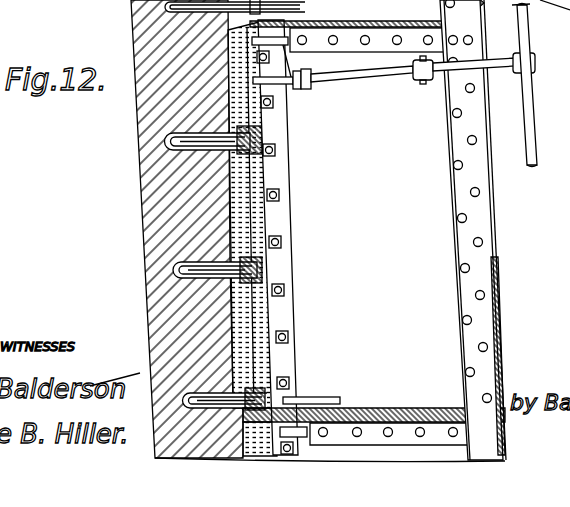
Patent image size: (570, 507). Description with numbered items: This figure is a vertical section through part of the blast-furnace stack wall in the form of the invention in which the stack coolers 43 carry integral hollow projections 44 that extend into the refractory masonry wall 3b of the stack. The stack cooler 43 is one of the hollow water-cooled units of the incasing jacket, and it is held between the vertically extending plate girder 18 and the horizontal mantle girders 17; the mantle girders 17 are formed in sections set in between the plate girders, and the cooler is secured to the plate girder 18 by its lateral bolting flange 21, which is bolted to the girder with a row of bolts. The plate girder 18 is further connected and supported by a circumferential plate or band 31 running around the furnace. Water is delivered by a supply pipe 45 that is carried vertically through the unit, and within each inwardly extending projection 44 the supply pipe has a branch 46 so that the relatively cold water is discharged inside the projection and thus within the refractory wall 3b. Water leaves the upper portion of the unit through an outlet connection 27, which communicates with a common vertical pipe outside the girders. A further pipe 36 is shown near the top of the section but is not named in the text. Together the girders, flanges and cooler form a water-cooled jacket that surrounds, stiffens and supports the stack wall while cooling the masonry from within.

The pipe 36 is at (182, 10).
The mantle girder 17 is at (352, 18).
The outlet connection 27 is at (394, 87).
The hollow projection 44 is at (172, 141).
The water supply pipe 45 is at (268, 152).
The lateral bolting flange 21 is at (282, 217).
The branch 46 is at (197, 268).
The masonry wall 3b is at (178, 268).
The stack cooler 43 is at (282, 264).
The plate girder 18 is at (260, 235).
The circumferential plate or band 31 is at (500, 278).